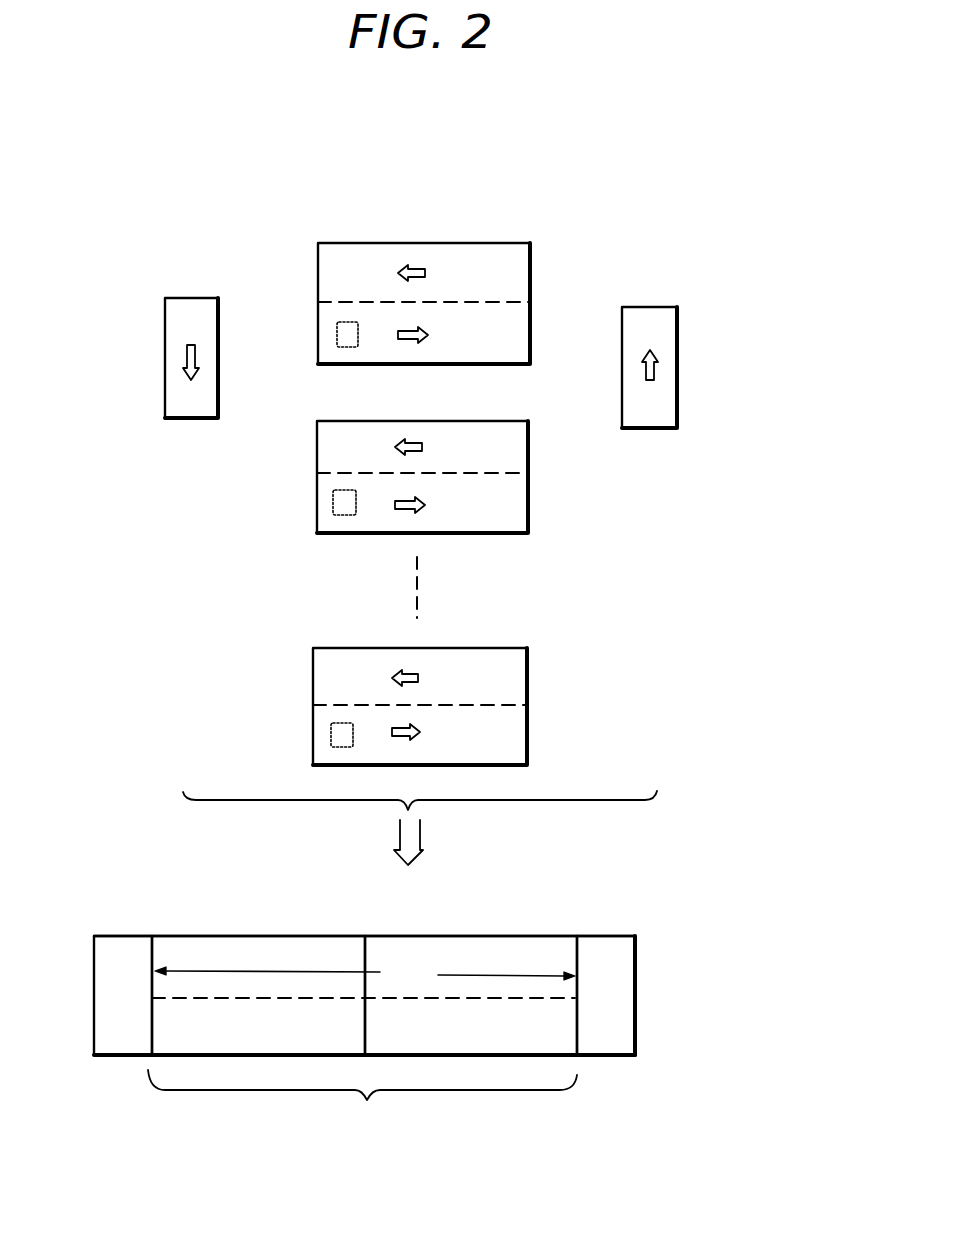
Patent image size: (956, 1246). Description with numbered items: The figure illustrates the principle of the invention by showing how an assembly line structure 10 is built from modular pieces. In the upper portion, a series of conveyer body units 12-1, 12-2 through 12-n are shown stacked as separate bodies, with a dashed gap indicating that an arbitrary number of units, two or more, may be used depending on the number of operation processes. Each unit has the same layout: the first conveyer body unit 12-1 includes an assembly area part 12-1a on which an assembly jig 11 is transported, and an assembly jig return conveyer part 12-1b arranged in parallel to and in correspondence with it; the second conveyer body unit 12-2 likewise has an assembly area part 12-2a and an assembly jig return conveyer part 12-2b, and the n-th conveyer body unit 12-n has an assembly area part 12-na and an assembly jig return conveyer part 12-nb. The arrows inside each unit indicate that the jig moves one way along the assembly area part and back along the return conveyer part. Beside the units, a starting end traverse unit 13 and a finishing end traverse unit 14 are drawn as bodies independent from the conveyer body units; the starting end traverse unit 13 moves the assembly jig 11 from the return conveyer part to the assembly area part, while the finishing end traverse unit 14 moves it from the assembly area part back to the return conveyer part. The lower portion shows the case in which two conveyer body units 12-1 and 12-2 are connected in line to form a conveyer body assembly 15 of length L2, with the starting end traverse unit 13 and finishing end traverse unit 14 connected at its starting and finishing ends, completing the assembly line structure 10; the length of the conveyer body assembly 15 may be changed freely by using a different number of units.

The assembly line structure 10 is at (620, 880).
The assembly jig 11 is at (340, 342).
The conveyer body unit 12-1 is at (543, 244).
The assembly area part 12-1a is at (392, 363).
The assembly jig return conveyer part 12-1b is at (381, 243).
The conveyer body unit 12-2 is at (540, 421).
The assembly area part 12-2a is at (335, 537).
The assembly jig return conveyer part 12-2b is at (333, 421).
The conveyer body unit 12-n is at (535, 658).
The assembly area part 12-na is at (328, 766).
The assembly jig return conveyer part 12-nb is at (340, 647).
The starting end traverse unit 13 is at (206, 298).
The finishing end traverse unit 14 is at (641, 298).
The conveyer body assembly 15 is at (362, 1105).
The length of conveyer body assembly L2 is at (365, 976).